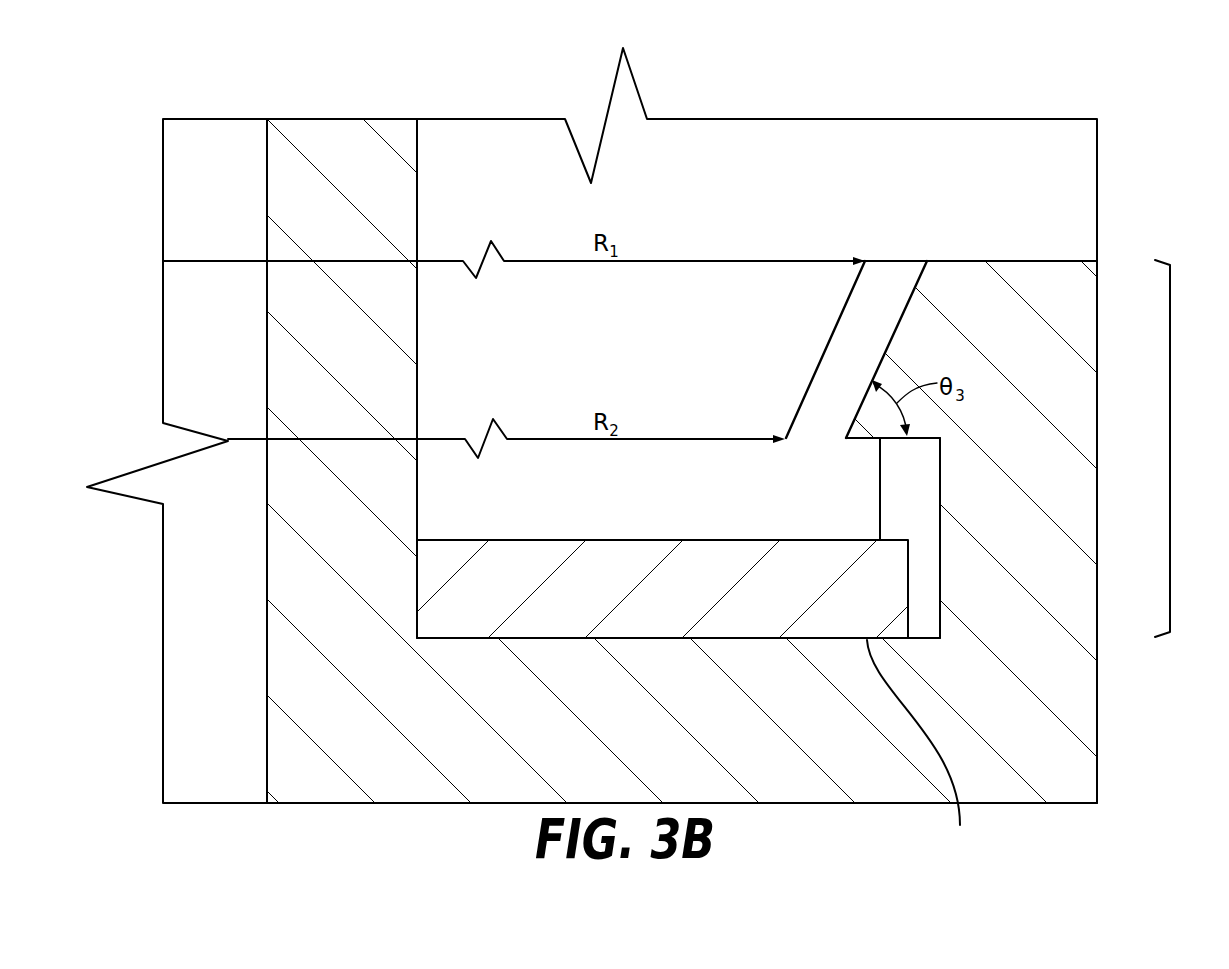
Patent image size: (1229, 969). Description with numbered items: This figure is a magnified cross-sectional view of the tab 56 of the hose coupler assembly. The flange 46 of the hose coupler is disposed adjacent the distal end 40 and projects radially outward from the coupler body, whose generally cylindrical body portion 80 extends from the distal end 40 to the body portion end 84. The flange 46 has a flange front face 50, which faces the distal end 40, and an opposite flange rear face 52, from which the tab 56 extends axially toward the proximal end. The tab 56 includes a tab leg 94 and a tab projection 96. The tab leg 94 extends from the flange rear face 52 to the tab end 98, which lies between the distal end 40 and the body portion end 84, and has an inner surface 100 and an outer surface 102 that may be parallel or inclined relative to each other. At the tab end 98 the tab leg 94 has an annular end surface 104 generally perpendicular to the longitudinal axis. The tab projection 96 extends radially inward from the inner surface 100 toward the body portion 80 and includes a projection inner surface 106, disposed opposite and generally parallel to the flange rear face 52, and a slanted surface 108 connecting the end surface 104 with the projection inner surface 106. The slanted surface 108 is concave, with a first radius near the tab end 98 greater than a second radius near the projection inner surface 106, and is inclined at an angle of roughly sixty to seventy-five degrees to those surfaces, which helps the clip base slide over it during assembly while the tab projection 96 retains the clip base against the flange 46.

The distal end 40 is at (356, 816).
The flange 46 is at (480, 775).
The flange front face 50 is at (827, 803).
The flange rear face 52 is at (918, 744).
The tab 56 is at (1171, 428).
The body portion 80 is at (375, 388).
The body portion end 84 is at (348, 96).
The tab leg 94 is at (1085, 502).
The tab projection 96 is at (920, 337).
The tab end 98 is at (995, 242).
The inner surface 100 is at (927, 490).
The outer surface 102 is at (1098, 407).
The end surface 104 is at (1065, 261).
The projection inner surface 106 is at (870, 440).
The slanted surface 108 is at (880, 328).